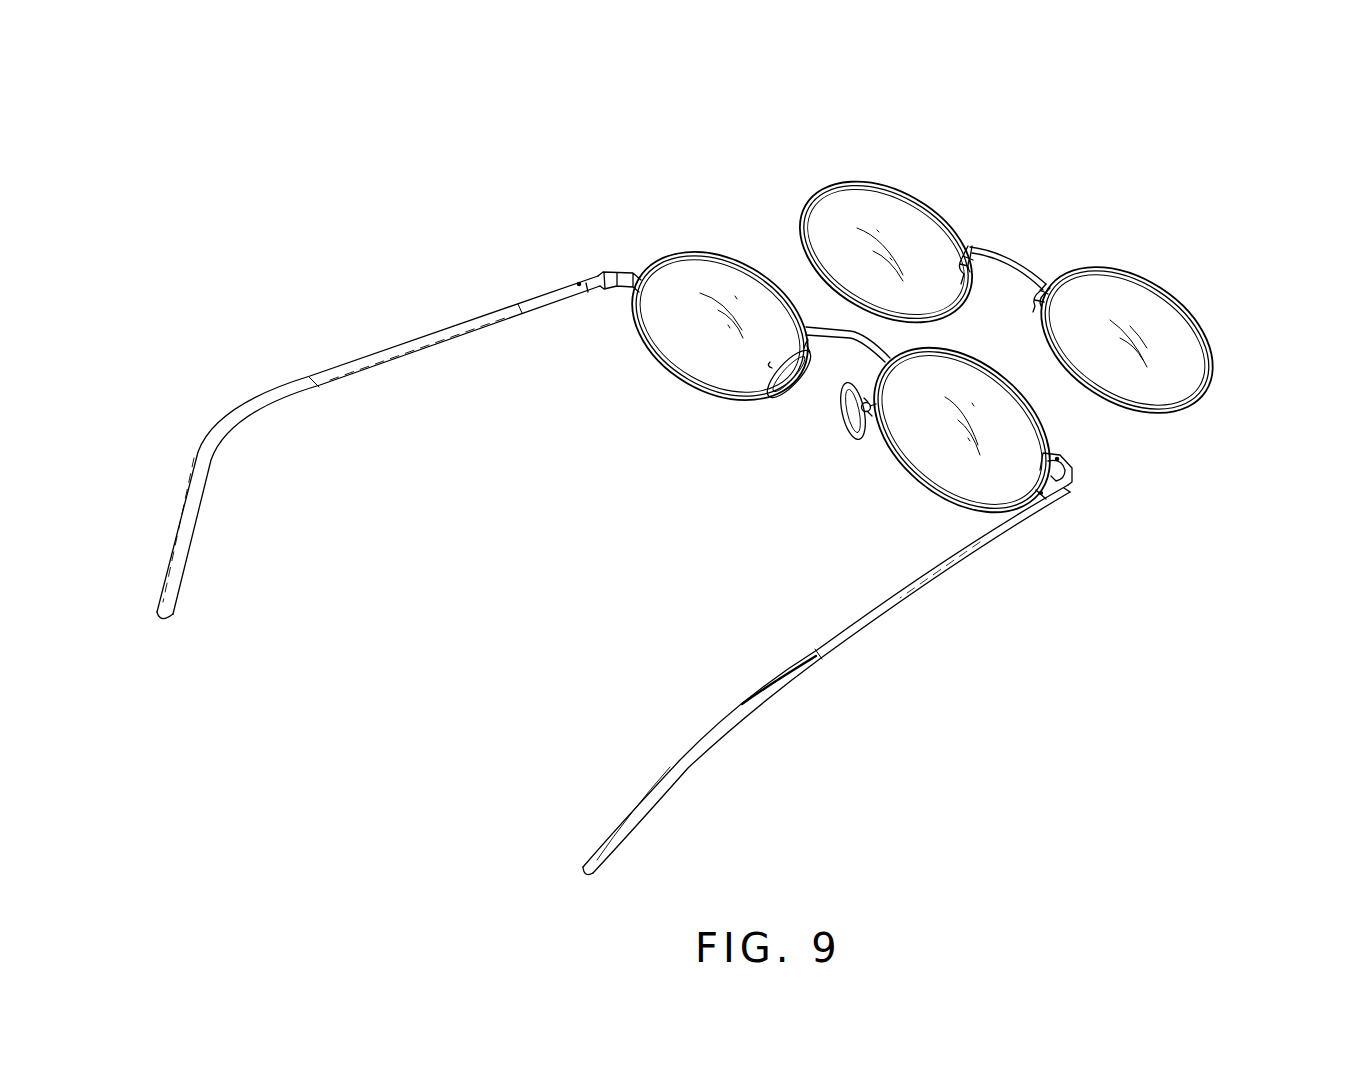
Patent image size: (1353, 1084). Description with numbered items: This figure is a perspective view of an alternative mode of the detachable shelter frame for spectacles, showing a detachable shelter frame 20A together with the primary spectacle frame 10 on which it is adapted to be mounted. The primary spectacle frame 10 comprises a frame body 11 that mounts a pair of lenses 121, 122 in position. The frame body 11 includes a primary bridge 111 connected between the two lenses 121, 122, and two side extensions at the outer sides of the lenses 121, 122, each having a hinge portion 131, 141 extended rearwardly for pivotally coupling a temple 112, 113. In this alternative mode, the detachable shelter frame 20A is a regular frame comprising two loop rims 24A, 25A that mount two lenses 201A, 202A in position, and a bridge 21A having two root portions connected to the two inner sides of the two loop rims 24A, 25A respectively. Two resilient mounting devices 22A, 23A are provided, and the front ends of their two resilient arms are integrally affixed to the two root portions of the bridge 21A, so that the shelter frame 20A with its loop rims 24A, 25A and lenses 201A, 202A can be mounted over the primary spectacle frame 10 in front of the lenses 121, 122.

The primary spectacle frame 10 is at (556, 603).
The frame body 11 is at (686, 513).
The primary bridge 111 is at (850, 340).
The temple 112 is at (423, 336).
The temple 113 is at (907, 585).
The lens 121 is at (685, 350).
The lens 122 is at (932, 463).
The hinge portion 131 is at (591, 258).
The hinge portion 141 is at (1068, 502).
The detachable shelter frame 20A is at (1100, 155).
The bridge 21A is at (1017, 256).
The resilient mounting device 22A is at (968, 245).
The resilient mounting device 23A is at (1052, 282).
The loop rim 24A is at (873, 183).
The loop rim 25A is at (1175, 300).
The lens 201A is at (825, 215).
The lens 202A is at (1167, 388).